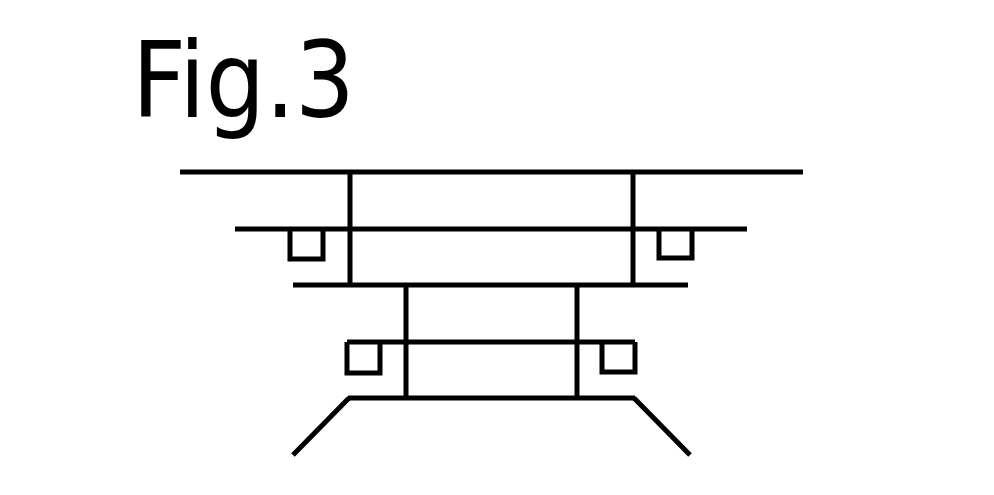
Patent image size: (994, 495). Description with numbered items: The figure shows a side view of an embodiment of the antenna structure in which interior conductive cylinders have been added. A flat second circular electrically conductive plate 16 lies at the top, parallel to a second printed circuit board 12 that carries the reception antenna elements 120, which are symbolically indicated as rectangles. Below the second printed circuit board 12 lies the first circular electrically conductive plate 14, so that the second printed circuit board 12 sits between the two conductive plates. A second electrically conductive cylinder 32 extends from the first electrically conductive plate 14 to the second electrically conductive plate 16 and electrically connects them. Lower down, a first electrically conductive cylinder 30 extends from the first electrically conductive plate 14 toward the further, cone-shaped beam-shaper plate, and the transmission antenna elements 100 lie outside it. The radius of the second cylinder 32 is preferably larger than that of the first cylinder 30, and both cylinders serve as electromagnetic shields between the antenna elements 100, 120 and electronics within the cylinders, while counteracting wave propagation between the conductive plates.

The second circular electrically conductive plate 16 is at (180, 172).
The second printed circuit board 12 is at (235, 229).
The first circular electrically conductive plate 14 is at (293, 285).
The second electrically conductive cylinder 32 is at (636, 197).
The reception antenna elements 120 is at (692, 257).
The first electrically conductive cylinder 30 is at (404, 310).
The transmission antenna elements 100 is at (635, 367).